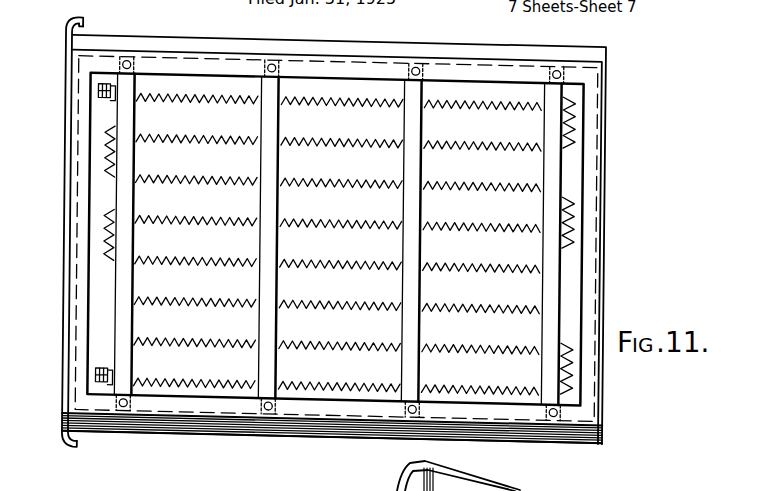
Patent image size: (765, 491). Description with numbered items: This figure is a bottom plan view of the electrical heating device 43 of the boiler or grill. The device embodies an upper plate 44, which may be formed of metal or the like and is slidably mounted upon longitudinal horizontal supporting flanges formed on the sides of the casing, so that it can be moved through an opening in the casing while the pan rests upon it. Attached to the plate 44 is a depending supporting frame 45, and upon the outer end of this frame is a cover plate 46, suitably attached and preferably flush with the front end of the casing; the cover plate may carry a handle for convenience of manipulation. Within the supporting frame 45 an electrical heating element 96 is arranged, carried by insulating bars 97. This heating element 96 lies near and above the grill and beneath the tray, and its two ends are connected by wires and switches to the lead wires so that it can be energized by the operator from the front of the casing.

The electrical heating device 43 is at (303, 420).
The upper plate 44 is at (512, 432).
The supporting frame 45 is at (367, 412).
The cover plate 46 is at (66, 430).
The electrical heating element 96 is at (343, 305).
The insulating bars 97 is at (435, 328).